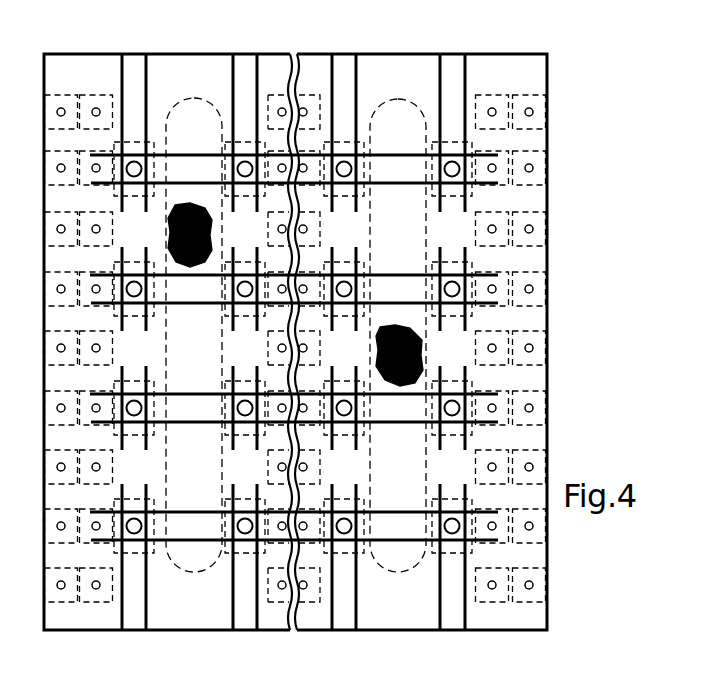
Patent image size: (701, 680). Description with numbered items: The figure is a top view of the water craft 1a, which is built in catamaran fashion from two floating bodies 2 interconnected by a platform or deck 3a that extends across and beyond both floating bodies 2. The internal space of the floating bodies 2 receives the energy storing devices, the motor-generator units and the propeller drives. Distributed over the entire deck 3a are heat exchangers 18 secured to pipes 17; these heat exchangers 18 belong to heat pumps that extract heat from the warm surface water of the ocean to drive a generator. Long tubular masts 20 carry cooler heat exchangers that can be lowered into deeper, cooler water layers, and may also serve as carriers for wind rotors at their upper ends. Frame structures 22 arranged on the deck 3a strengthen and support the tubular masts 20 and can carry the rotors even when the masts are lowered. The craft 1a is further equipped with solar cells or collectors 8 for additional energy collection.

The water craft 1a is at (163, 54).
The platform or deck 3a is at (375, 77).
The floating bodies 2 is at (197, 98).
The solar cells or collectors 8 is at (212, 233).
The pipes 17 is at (529, 108).
The heat exchangers 18 is at (90, 100).
The tubular masts 20 is at (452, 161).
The frame structures 22 is at (430, 150).